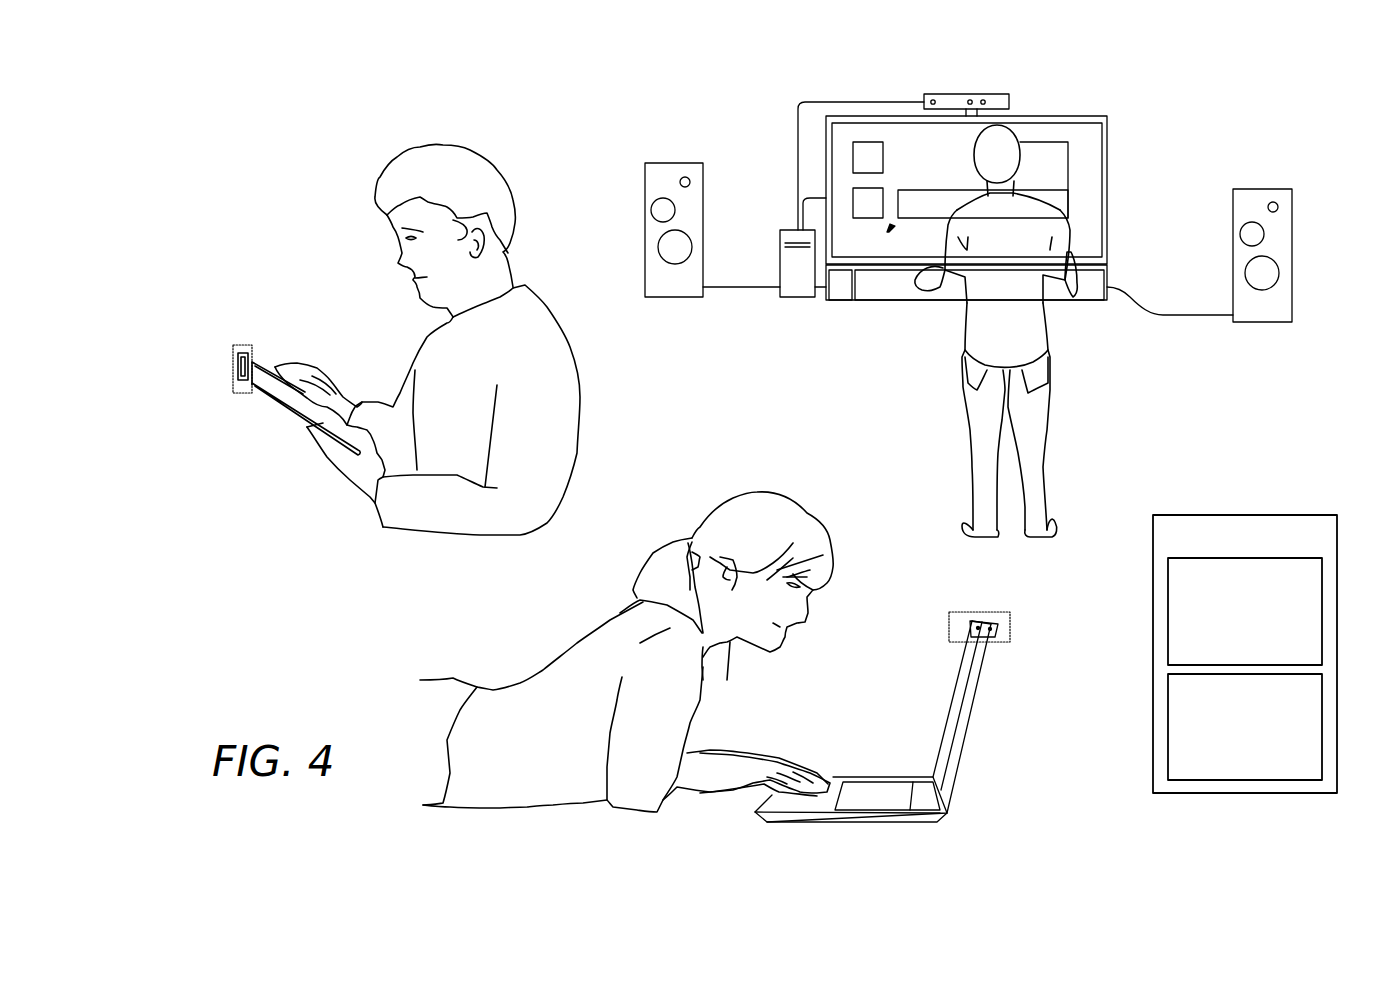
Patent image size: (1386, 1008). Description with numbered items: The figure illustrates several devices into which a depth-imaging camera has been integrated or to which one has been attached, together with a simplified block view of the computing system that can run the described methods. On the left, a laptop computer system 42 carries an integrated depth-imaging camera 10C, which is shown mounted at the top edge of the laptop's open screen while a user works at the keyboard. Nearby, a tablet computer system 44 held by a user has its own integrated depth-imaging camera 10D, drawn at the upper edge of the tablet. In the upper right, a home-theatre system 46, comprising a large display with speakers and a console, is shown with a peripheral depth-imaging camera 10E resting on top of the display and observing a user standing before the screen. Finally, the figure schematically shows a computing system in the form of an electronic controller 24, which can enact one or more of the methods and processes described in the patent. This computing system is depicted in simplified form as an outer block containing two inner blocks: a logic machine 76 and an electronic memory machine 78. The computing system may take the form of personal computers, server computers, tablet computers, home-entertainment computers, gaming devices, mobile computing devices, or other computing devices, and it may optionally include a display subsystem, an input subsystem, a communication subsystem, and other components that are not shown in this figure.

The depth-imaging camera 10C is at (985, 612).
The depth-imaging camera 10D is at (248, 343).
The peripheral depth-imaging camera 10E is at (963, 94).
The electronic controller 24 is at (1245, 654).
The laptop computer system 42 is at (910, 693).
The tablet computer system 44 is at (290, 347).
The home-theatre system 46 is at (968, 296).
The logic machine 76 is at (1245, 611).
The electronic memory machine 78 is at (1245, 727).